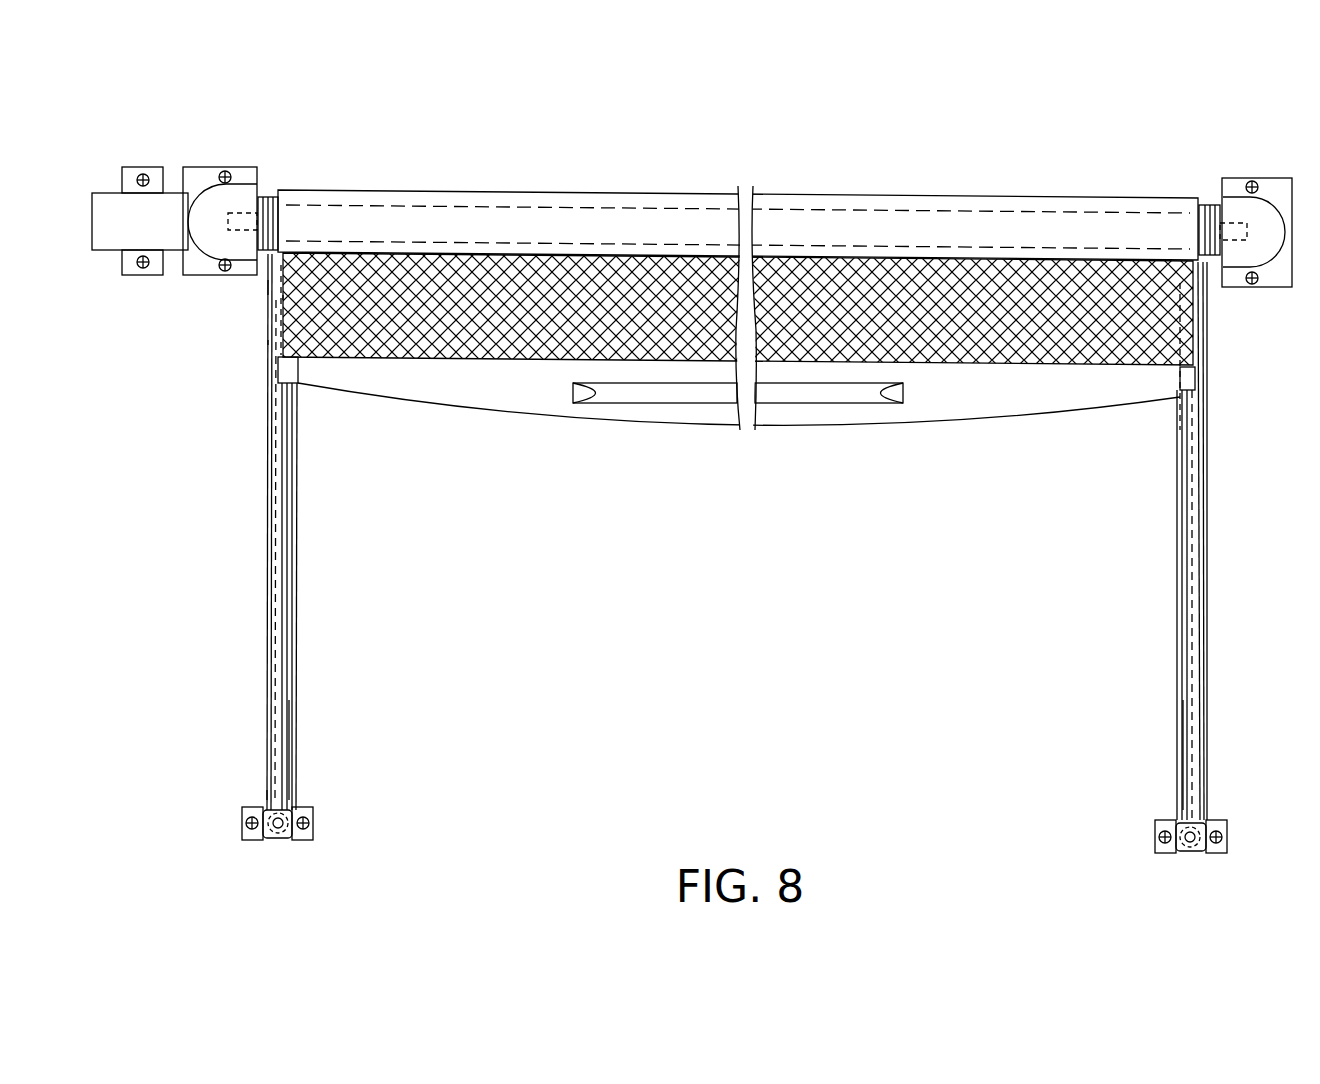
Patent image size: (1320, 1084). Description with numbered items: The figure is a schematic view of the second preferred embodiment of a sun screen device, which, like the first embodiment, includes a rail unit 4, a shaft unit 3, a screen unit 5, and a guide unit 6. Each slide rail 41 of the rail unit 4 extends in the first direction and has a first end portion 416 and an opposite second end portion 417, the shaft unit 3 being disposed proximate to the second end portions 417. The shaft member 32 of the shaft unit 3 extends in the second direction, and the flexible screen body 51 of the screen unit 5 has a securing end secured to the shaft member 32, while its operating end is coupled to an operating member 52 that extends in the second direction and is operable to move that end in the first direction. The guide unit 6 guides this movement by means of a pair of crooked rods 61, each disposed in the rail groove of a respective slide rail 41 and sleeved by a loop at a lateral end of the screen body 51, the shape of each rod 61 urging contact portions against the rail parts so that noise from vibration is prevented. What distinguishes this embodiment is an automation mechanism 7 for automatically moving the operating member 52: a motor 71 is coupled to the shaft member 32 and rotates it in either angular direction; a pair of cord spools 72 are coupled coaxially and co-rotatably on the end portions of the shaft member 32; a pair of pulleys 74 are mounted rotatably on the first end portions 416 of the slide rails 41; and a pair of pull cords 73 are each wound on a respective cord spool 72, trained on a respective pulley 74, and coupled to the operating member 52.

The shaft unit 3 is at (738, 171).
The shaft member 32 is at (830, 220).
The rail unit 4 is at (711, 539).
The slide rail 41 is at (268, 498).
The first end portion 416 is at (267, 793).
The second end portion 417 is at (268, 282).
The screen unit 5 is at (738, 344).
The screen body 51 is at (893, 262).
The operating member 52 is at (500, 403).
The guide unit 6 is at (262, 303).
The crooked rod 61 is at (265, 342).
The automation mechanism 7 is at (174, 203).
The motor 71 is at (107, 225).
The cord spool 72 is at (265, 195).
The pull cord 73 is at (288, 768).
The pulley 74 is at (283, 834).